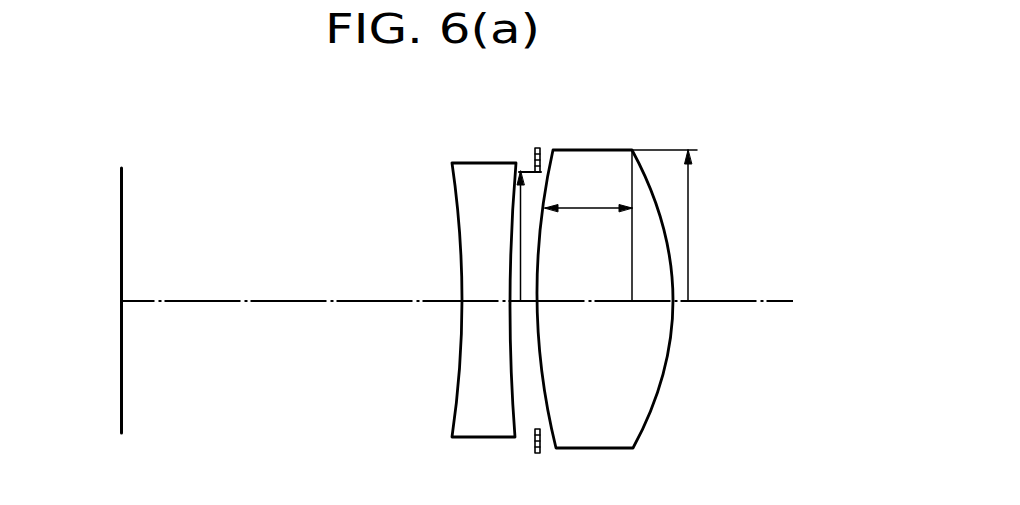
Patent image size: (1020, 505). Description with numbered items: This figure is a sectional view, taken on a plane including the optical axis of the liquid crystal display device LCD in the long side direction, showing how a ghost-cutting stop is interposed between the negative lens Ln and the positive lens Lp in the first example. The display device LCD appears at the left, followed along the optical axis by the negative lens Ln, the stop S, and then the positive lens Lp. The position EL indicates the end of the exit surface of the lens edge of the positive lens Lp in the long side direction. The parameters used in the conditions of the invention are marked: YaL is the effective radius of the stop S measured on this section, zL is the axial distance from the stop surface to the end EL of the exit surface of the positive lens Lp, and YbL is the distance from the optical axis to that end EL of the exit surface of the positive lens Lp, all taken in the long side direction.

The liquid crystal display device LCD is at (121, 194).
The negative lens Ln is at (490, 162).
The stop S is at (537, 147).
The positive lens Lp is at (593, 149).
The end position of the exit surface of the lens edge of the positive lens in the lo EL is at (633, 150).
The effective radius of the stop in the long side direction YaL is at (521, 244).
The axial distance from the stop surface to the end of the exit surface of the posit zL is at (588, 194).
The distance from the optical axis to the end of the exit surface of the positive le YbL is at (695, 225).